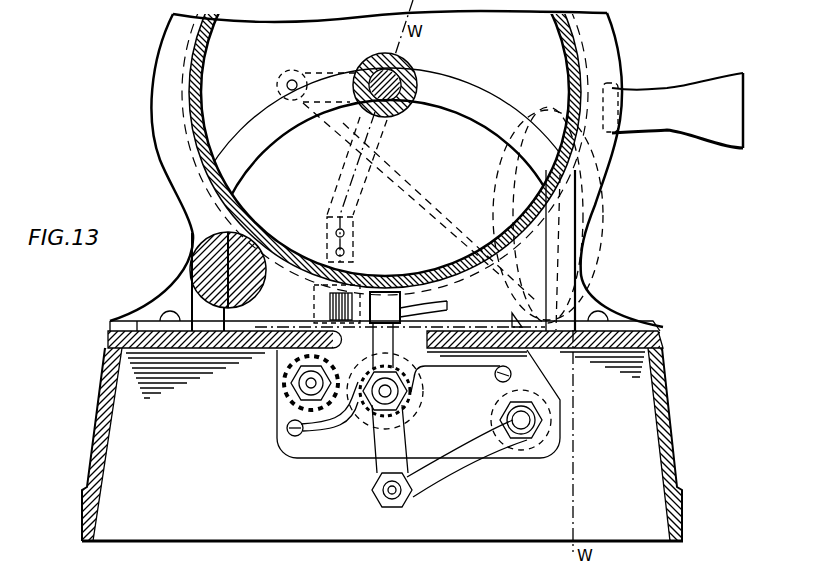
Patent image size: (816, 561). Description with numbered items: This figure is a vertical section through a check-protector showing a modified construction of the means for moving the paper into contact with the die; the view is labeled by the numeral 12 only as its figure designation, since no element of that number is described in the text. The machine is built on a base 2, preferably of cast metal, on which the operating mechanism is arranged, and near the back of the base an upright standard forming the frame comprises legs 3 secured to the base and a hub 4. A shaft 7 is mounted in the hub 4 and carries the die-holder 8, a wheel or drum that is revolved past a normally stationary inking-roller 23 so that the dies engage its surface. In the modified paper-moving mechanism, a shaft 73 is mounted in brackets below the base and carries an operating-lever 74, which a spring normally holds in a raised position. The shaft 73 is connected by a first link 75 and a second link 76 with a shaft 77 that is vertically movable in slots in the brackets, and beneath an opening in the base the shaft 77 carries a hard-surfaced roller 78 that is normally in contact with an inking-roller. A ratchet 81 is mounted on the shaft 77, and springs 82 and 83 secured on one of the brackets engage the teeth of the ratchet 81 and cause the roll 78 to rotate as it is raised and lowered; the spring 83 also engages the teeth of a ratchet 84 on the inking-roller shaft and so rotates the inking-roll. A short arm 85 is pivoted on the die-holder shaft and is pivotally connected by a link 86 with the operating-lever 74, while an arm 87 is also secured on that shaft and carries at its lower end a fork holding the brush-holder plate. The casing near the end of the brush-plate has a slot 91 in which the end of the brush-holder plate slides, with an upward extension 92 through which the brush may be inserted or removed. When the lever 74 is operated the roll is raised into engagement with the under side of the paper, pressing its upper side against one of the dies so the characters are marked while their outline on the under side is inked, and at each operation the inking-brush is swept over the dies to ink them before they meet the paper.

The base 2 is at (105, 397).
The legs 3 is at (222, 322).
The hub 4 is at (400, 72).
The shaft 7 is at (405, 88).
The die-holder 8 is at (268, 232).
The standard 12 is at (610, 57).
The inking-roller 23 is at (245, 303).
The shaft 73 is at (522, 425).
The operating-lever 74 is at (633, 117).
The link 75 is at (453, 467).
The link 76 is at (380, 473).
The shaft 77 is at (387, 443).
The hard-surfaced roller 78 is at (429, 218).
The ratchet 81 is at (407, 397).
The spring 82 is at (447, 366).
The spring 83 is at (322, 419).
The ratchet 84 is at (290, 403).
The short arm 85 is at (316, 90).
The link 86 is at (437, 227).
The arm 87 is at (373, 156).
The slot 91 is at (438, 306).
The upward extension 92 is at (385, 307).